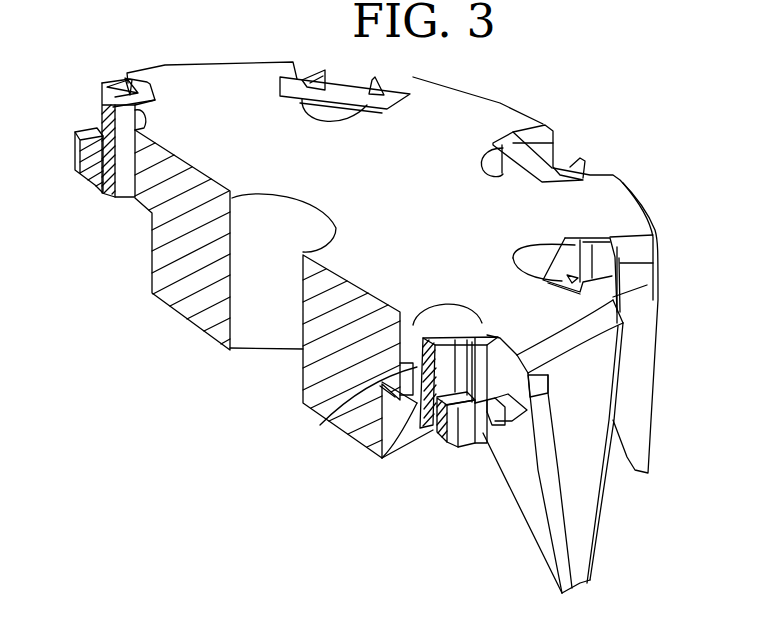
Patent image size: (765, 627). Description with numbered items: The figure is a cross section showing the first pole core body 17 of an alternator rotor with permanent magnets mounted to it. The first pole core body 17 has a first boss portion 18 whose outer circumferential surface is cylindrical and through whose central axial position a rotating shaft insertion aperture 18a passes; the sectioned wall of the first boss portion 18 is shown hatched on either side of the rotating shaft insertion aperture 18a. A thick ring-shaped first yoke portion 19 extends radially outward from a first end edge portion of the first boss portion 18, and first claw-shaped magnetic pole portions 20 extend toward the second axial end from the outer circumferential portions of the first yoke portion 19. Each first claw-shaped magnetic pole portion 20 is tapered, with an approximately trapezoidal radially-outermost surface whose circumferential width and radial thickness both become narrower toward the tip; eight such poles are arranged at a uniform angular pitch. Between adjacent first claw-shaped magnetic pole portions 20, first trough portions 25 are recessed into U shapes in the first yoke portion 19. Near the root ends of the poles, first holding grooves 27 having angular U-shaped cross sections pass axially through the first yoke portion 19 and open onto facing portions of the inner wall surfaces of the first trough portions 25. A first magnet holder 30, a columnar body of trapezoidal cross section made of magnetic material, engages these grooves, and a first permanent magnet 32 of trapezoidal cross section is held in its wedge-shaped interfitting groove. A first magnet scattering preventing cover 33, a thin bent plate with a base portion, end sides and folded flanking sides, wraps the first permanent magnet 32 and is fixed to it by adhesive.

The first pole core body 17 is at (168, 307).
The first boss portion 18 is at (150, 258).
The rotating shaft insertion aperture 18a is at (250, 334).
The first yoke portion 19 is at (148, 212).
The first claw-shaped magnetic pole portions 20 is at (583, 475).
The first trough portions 25 is at (413, 363).
The first holding grooves 27 is at (300, 375).
The first magnet holder 30 is at (393, 457).
The first permanent magnet 32 is at (437, 438).
The first magnet scattering preventing cover 33 is at (465, 452).